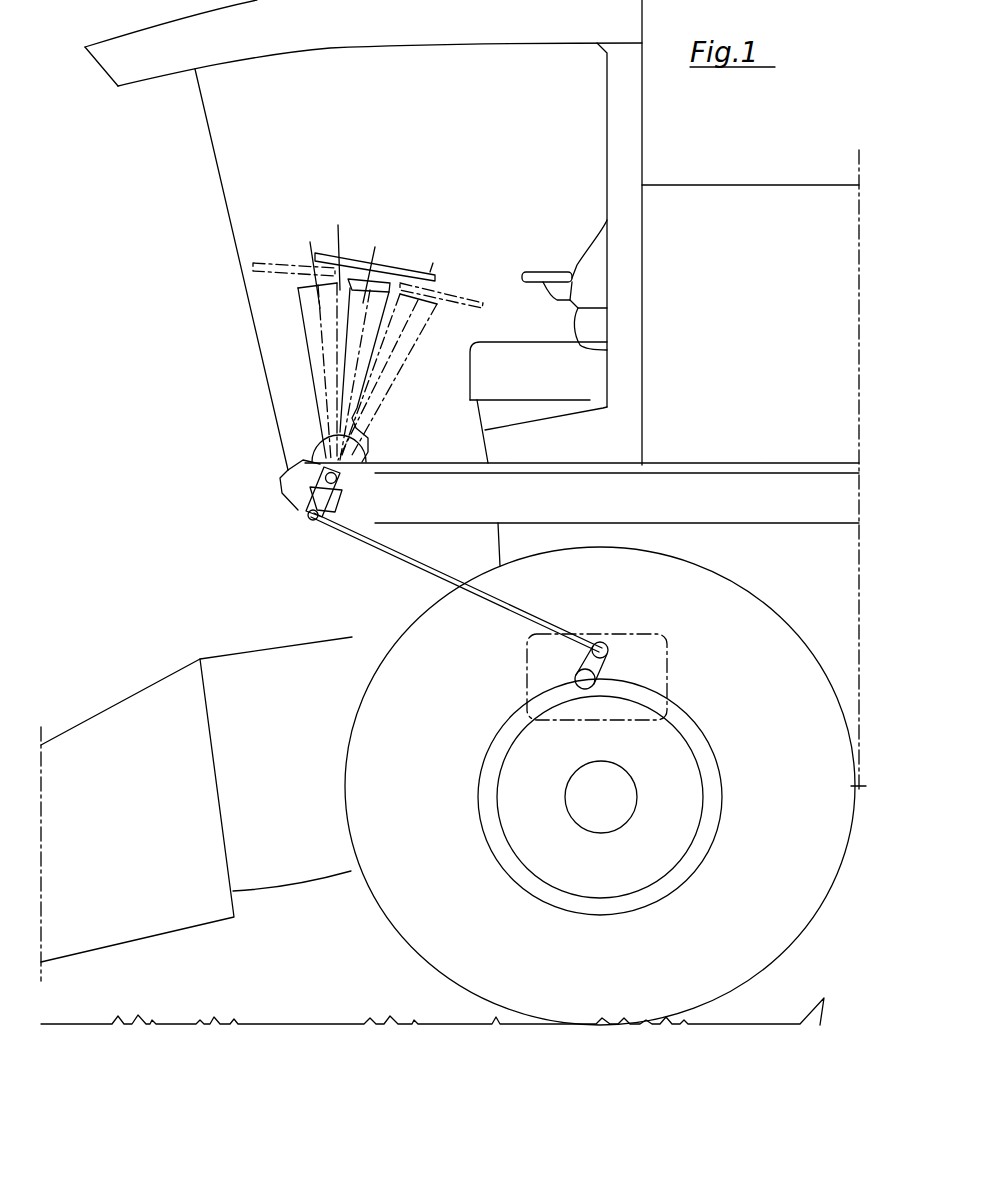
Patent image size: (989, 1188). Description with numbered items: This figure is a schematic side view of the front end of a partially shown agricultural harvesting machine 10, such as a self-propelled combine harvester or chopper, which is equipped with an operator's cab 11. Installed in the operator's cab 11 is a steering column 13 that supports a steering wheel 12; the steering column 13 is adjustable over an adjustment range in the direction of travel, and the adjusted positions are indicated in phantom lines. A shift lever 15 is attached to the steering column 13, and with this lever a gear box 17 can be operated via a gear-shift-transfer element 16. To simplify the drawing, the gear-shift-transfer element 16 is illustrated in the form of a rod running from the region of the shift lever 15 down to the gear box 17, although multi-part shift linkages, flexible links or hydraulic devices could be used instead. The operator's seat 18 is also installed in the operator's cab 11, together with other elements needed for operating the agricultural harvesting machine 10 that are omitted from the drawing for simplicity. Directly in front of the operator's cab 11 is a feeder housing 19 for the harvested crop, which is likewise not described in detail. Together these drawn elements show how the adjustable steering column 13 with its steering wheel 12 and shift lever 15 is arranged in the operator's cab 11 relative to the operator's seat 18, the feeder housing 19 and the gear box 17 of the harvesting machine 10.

The agricultural harvesting machine 10 is at (768, 183).
The operator's cab 11 is at (446, 107).
The steering wheel 12 is at (338, 255).
The steering column 13 is at (342, 363).
The shift lever 15 is at (313, 493).
The gear-shift-transfer element 16 is at (407, 558).
The gear box 17 is at (659, 652).
The operator's seat 18 is at (532, 345).
The feeder housing 19 is at (260, 670).